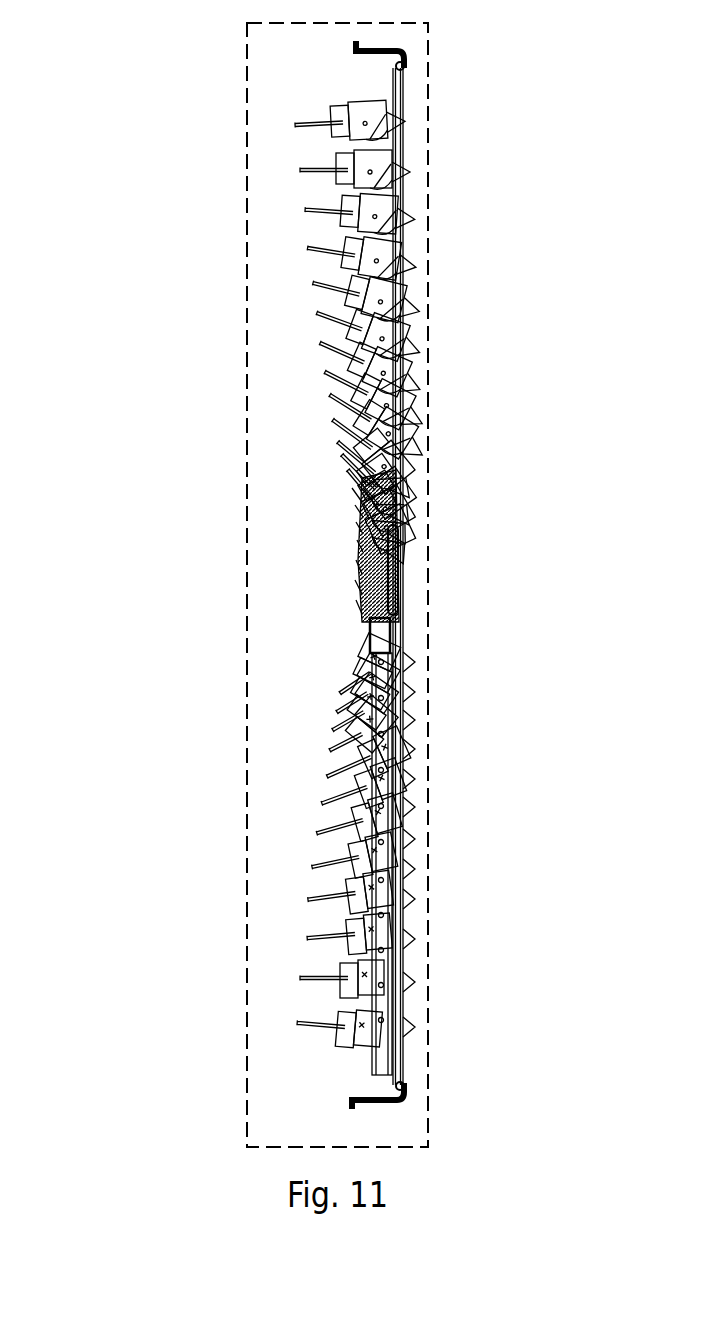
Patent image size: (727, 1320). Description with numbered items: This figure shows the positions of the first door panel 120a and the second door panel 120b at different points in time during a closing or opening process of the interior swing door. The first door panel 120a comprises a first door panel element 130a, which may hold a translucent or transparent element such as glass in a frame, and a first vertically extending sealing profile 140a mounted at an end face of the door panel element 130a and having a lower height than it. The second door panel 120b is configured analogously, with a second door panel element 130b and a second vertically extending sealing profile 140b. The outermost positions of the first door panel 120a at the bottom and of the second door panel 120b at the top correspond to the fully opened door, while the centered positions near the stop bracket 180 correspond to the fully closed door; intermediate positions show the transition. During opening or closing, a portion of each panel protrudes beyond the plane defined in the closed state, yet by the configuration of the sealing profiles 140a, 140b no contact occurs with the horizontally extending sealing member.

The first door panel 120a is at (237, 846).
The second door panel 120b is at (253, 360).
The first door panel element 130a is at (323, 825).
The second door panel element 130b is at (328, 352).
The first vertically extending sealing profile 140a is at (365, 1028).
The second vertically extending sealing profile 140b is at (385, 108).
The stop bracket 180 is at (405, 577).